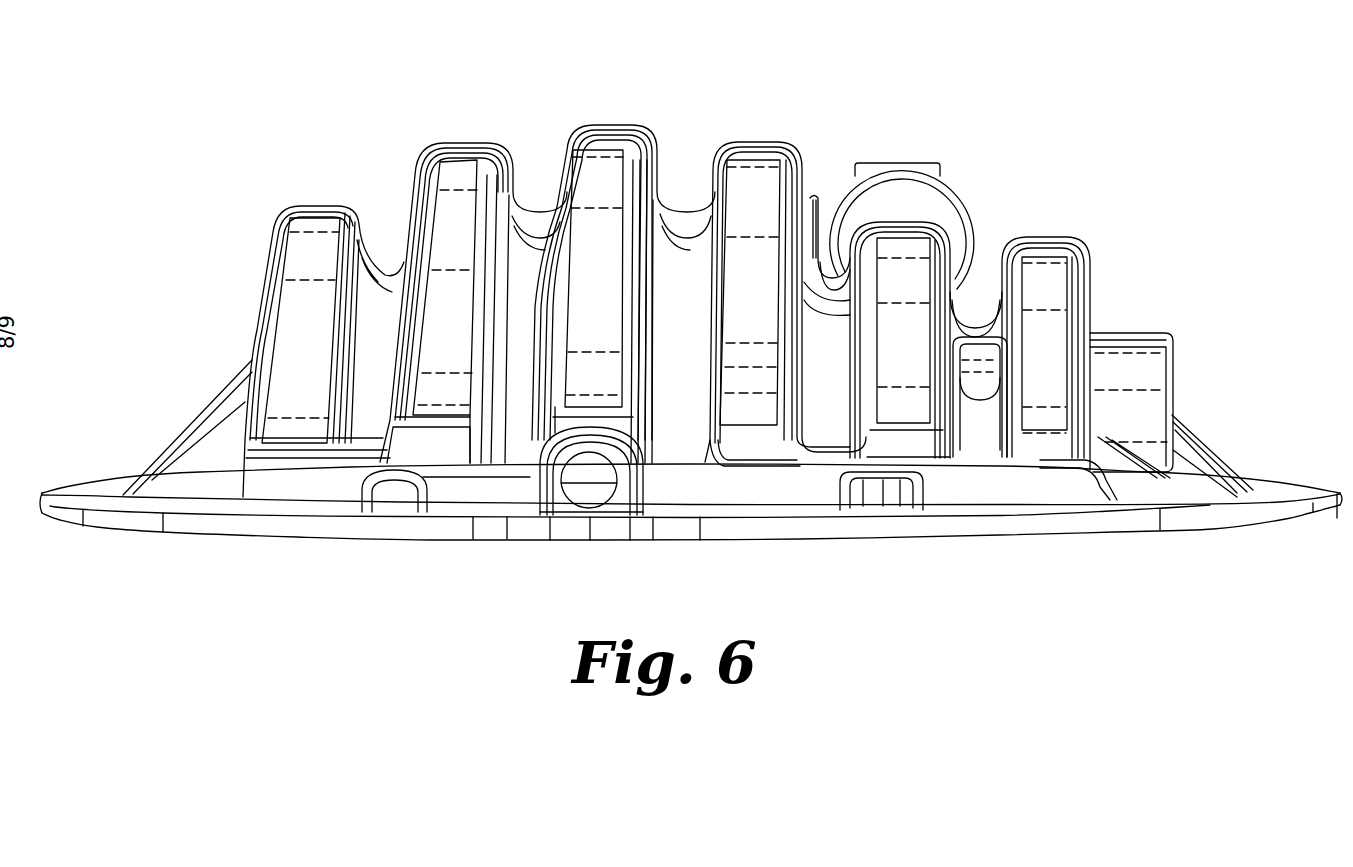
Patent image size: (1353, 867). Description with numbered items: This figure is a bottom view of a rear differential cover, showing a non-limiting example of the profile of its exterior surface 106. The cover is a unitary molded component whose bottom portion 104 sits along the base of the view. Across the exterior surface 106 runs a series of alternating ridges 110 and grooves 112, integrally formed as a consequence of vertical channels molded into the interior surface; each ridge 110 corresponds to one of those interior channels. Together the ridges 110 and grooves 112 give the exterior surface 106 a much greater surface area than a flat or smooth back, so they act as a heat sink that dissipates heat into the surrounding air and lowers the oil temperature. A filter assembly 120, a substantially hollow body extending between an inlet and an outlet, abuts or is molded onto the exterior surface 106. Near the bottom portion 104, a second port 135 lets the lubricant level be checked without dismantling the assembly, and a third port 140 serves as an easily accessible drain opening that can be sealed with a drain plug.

The bottom portion 104 is at (437, 555).
The exterior surface 106 is at (260, 377).
The ridges 110 is at (690, 158).
The grooves 112 is at (818, 177).
The filter assembly 120 is at (930, 210).
The second port 135 is at (1175, 376).
The third port 140 is at (588, 497).